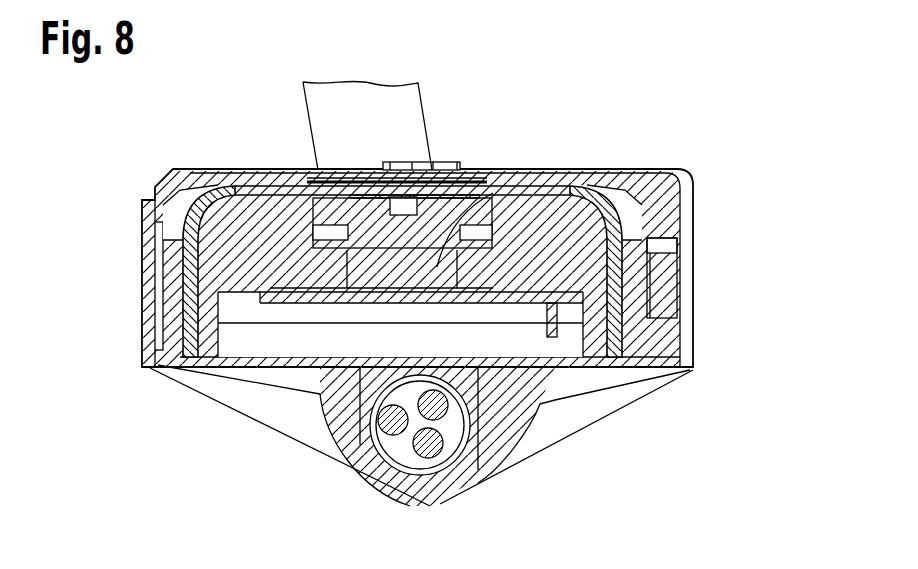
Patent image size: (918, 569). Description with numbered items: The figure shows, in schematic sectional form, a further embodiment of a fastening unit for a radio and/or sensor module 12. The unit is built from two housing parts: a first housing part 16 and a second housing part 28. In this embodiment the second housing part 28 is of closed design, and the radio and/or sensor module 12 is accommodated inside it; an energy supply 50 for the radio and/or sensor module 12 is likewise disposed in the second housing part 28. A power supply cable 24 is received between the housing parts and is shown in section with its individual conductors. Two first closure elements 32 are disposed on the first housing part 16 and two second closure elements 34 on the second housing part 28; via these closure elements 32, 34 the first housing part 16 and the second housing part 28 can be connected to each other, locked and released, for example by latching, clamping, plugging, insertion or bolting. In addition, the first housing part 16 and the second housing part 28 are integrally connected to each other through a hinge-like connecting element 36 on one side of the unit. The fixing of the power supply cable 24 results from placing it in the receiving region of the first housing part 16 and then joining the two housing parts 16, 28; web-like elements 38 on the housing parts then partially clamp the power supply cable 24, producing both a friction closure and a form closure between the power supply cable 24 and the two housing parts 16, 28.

The radio and/or sensor module 12 is at (248, 240).
The first housing part 16 is at (583, 405).
The power supply cable 24 is at (472, 453).
The second housing part 28 is at (640, 197).
The first closure elements 32 is at (725, 278).
The second closure elements 34 is at (663, 300).
The hinge-like connecting element 36 is at (150, 294).
The web-like elements 38 is at (317, 450).
The energy supply 50 is at (483, 200).